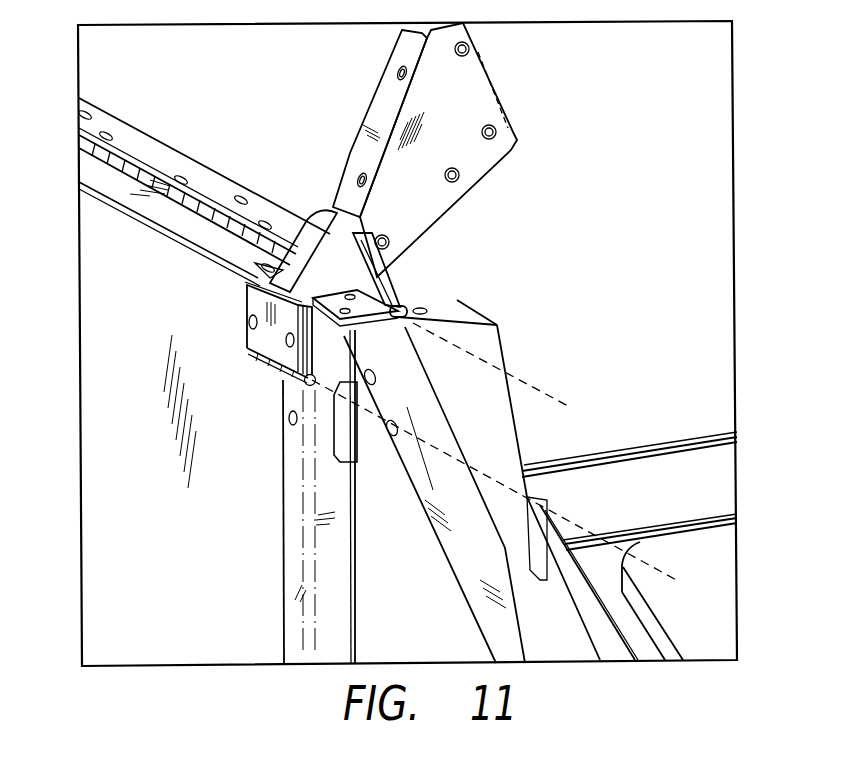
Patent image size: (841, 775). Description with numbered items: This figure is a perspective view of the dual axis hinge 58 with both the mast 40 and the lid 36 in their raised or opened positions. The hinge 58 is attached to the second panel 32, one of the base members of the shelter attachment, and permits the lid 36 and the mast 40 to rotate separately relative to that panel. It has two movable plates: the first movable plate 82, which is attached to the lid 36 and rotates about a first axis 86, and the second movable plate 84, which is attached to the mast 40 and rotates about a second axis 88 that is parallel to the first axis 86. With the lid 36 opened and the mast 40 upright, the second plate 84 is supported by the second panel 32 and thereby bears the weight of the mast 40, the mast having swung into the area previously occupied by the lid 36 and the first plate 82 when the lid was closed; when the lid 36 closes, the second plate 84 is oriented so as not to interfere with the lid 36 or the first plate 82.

The second panel 32 is at (112, 452).
The mast 40 is at (475, 78).
The dual axis hinge 58 is at (400, 277).
The first movable plate 82 is at (443, 310).
The second movable plate 84 is at (260, 293).
The lid 36 is at (500, 448).
The first axis 86 is at (537, 385).
The second axis 88 is at (667, 575).